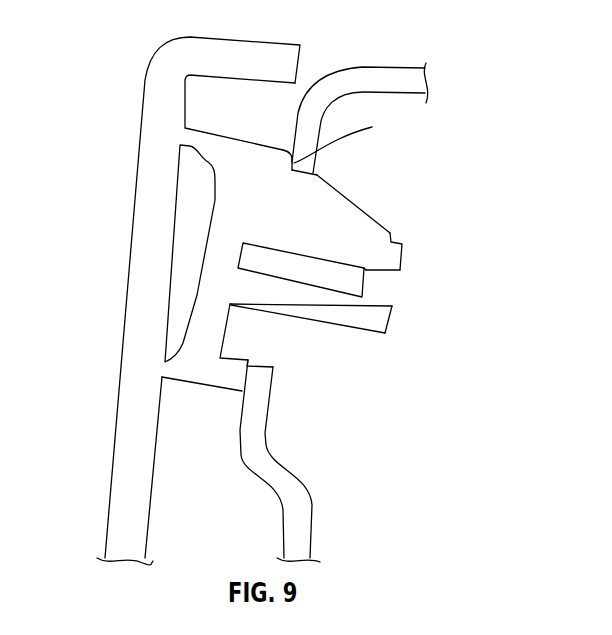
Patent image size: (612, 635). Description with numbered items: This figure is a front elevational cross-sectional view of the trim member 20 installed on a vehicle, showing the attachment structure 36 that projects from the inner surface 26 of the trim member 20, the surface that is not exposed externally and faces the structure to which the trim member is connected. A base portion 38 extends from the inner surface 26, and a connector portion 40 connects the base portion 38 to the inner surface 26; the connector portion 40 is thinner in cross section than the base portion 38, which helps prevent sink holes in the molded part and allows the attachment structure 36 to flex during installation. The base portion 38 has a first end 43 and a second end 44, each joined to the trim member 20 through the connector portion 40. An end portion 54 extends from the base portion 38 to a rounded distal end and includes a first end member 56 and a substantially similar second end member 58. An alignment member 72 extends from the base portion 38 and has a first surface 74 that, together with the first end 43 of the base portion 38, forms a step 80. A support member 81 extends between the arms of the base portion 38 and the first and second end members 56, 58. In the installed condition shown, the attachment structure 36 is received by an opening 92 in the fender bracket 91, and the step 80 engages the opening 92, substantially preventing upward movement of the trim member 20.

The trim member 20 is at (234, 37).
The inner surface 26 is at (153, 485).
The attachment structure 36 is at (406, 253).
The base portion 38 is at (201, 258).
The connector portion 40 is at (165, 382).
The first end 43 is at (223, 136).
The second end 44 is at (233, 358).
The end portion 54 is at (324, 326).
The first end member 56 is at (370, 287).
The second end member 58 is at (391, 323).
The alignment member 72 is at (383, 226).
The first surface 74 is at (319, 173).
The step 80 is at (348, 138).
The support member 81 is at (389, 278).
The fender bracket 91 is at (360, 66).
The opening 92 is at (299, 174).